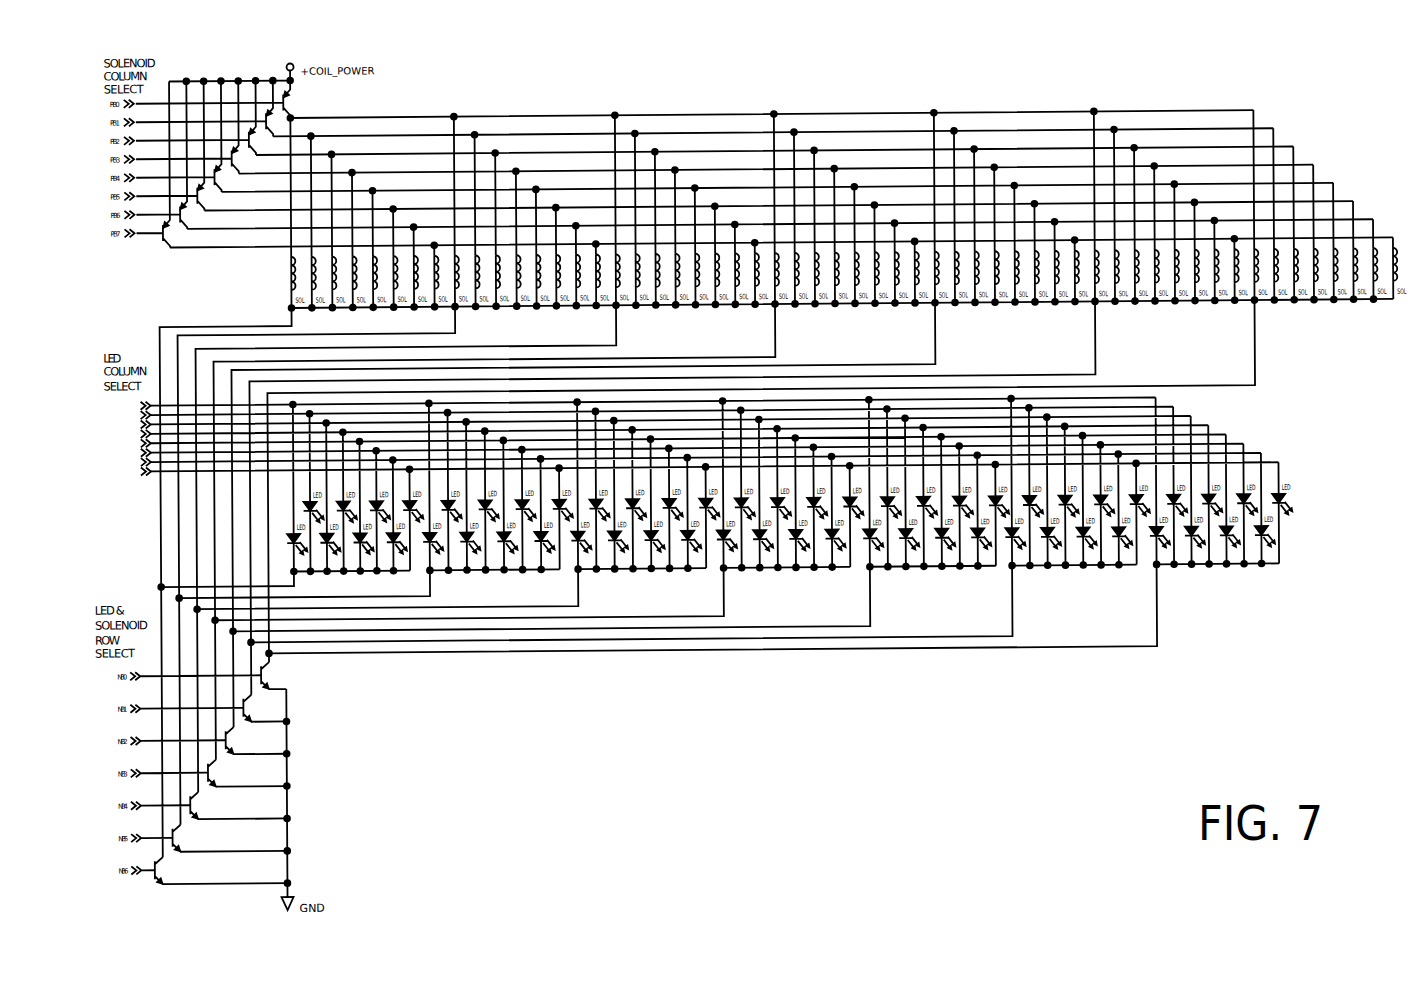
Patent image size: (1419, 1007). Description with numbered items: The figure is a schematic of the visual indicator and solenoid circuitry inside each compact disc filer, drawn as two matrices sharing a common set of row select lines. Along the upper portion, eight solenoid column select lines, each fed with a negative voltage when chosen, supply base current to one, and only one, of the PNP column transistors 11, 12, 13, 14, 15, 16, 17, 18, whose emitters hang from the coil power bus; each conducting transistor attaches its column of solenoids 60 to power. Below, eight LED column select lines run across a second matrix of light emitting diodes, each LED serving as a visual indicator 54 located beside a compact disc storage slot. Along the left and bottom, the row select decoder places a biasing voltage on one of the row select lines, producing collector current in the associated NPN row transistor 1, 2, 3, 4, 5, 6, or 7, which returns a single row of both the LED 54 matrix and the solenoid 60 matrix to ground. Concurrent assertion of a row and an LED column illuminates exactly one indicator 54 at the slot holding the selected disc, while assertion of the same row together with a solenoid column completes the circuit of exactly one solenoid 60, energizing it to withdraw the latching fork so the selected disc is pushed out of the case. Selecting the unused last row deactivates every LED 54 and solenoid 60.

The solenoid 60 is at (1280, 364).
The visual indicator 54 is at (702, 542).
The PNP transistor 11 is at (222, 99).
The PNP transistor 12 is at (214, 108).
The PNP transistor 13 is at (205, 118).
The PNP transistor 14 is at (197, 128).
The PNP transistor 15 is at (188, 137).
The PNP transistor 16 is at (180, 146).
The PNP transistor 17 is at (171, 155).
The PNP transistor 18 is at (162, 164).
The NPN transistor 1 is at (275, 675).
The NPN transistor 2 is at (264, 707).
The NPN transistor 3 is at (256, 740).
The NPN transistor 4 is at (247, 773).
The NPN transistor 5 is at (238, 805).
The NPN transistor 6 is at (229, 838).
The NPN transistor 7 is at (221, 870).